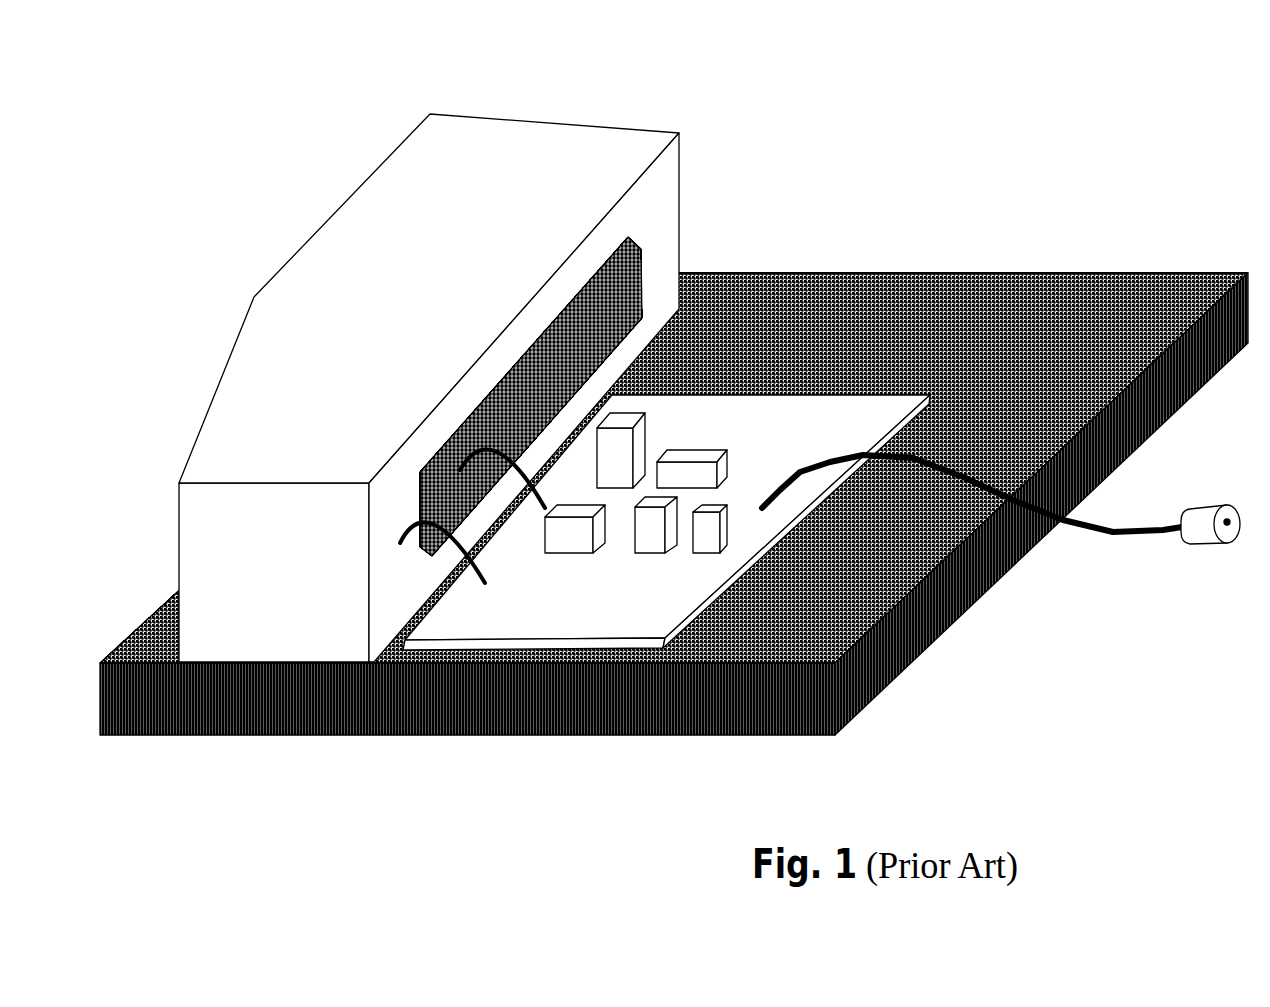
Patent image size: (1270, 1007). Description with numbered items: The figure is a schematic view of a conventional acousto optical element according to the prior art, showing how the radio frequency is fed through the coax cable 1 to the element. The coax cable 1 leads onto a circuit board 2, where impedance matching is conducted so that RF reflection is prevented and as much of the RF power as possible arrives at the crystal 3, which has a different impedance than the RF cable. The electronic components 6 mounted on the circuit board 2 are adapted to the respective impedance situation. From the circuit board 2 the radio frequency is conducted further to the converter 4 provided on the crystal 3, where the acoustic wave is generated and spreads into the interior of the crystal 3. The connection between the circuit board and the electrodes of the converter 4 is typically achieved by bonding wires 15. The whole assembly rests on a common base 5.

The coax cable 1 is at (1095, 535).
The circuit board 2 is at (508, 618).
The crystal 3 is at (592, 160).
The converter 4 is at (602, 330).
The base plate 5 is at (920, 327).
The electronic components 6 is at (652, 416).
The wire loops 15 is at (521, 435).